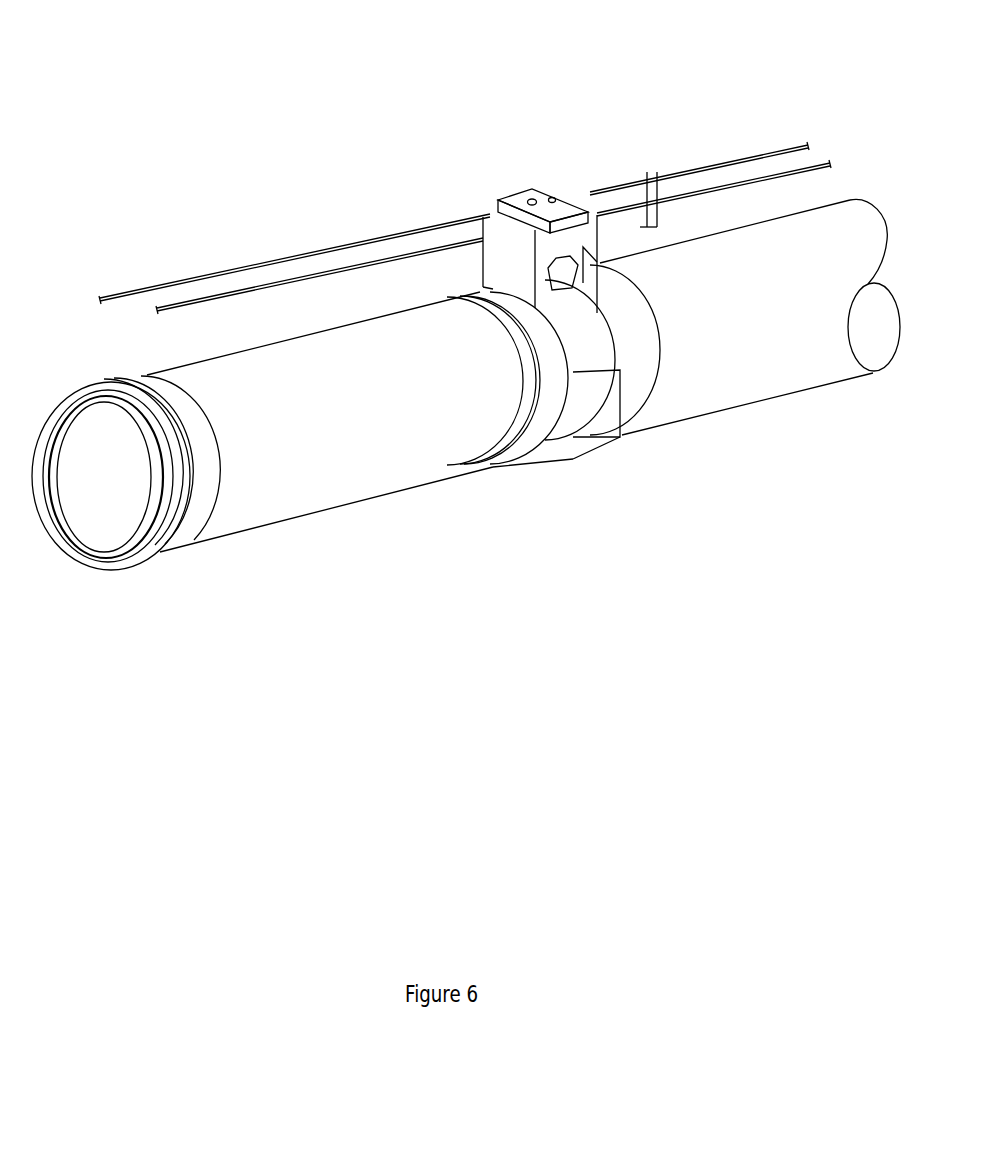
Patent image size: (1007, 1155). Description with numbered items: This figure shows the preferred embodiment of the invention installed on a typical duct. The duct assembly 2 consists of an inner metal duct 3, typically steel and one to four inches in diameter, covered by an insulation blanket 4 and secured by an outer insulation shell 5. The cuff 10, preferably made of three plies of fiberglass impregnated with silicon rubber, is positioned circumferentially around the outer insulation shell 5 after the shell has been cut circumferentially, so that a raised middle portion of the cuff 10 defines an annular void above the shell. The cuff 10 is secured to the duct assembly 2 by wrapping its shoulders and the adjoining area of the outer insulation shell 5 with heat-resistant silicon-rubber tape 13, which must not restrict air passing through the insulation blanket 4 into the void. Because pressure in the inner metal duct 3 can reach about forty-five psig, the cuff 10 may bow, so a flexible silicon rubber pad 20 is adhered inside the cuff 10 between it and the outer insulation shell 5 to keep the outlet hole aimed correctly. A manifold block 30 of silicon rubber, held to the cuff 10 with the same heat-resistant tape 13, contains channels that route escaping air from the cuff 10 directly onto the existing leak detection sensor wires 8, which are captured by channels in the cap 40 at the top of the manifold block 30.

The duct assembly 2 is at (523, 462).
The inner metal duct 3 is at (111, 525).
The insulation blanket 4 is at (183, 525).
The outer insulation shell 5 is at (441, 450).
The sensor wires 8 is at (230, 290).
The cuff 10 is at (583, 390).
The heat-resistant tape 13 is at (646, 481).
The pad 20 is at (661, 389).
The manifold block 30 is at (689, 146).
The cap 40 is at (499, 175).